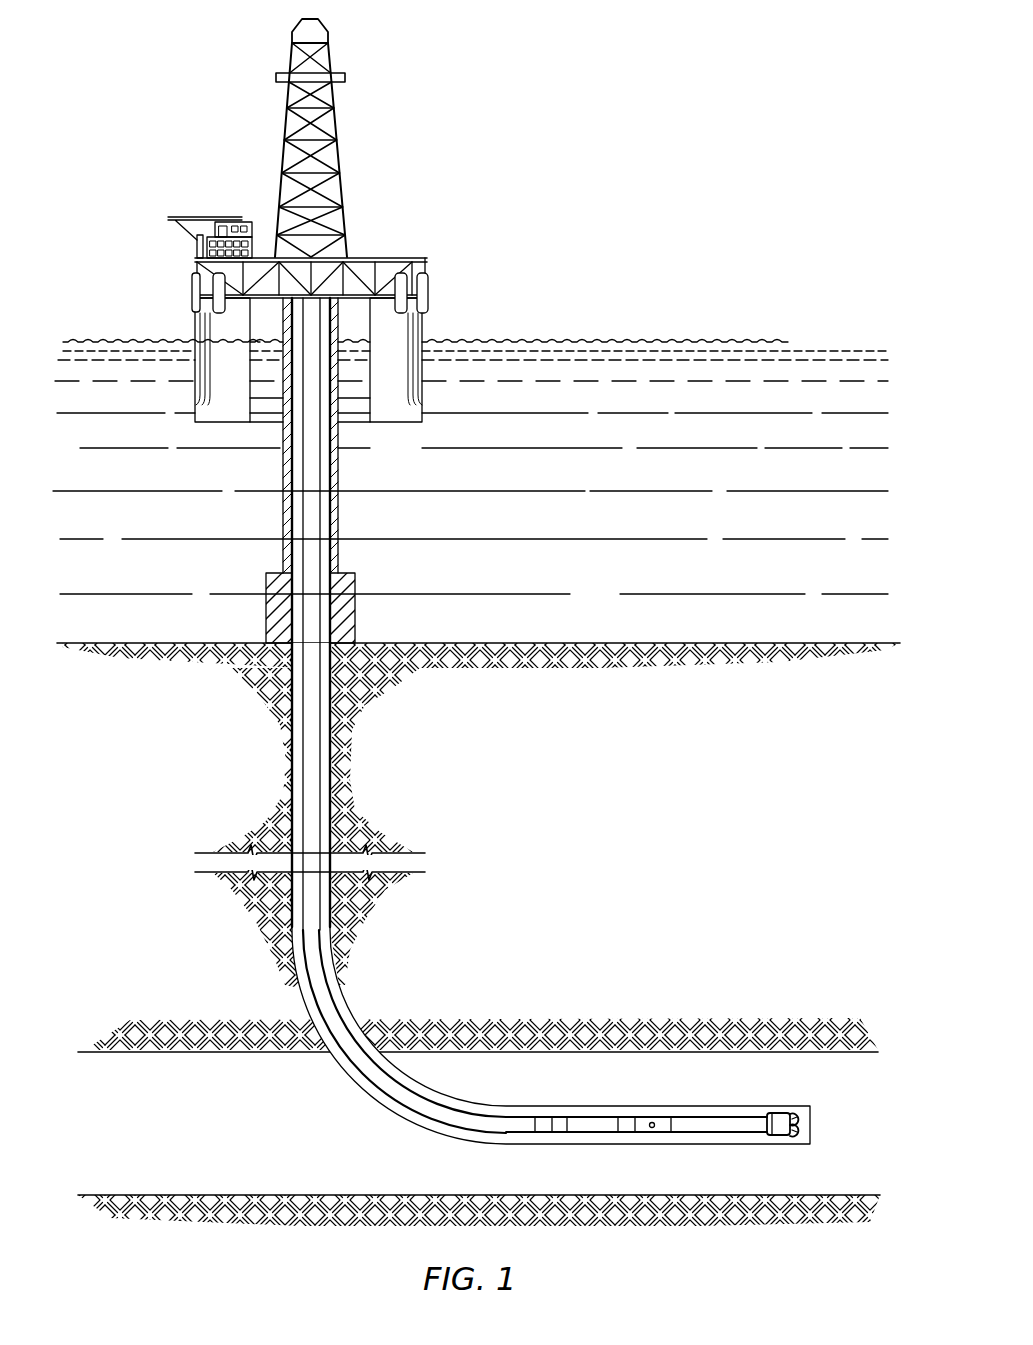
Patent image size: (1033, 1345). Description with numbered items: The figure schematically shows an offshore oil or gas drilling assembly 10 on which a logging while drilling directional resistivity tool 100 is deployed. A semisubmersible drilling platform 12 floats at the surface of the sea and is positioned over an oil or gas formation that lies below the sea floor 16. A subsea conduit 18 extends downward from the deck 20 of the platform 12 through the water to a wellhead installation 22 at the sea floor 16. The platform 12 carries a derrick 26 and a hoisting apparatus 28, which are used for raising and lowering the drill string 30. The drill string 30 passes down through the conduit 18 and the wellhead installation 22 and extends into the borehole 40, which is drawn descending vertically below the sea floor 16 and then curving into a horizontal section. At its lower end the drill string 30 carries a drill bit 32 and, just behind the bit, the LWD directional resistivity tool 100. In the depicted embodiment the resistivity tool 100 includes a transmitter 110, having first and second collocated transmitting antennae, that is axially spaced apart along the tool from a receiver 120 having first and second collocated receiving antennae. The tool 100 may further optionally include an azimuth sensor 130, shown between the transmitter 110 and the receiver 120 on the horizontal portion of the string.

The offshore oil or gas drilling assembly 10 is at (320, 220).
The semisubmersible drilling platform 12 is at (414, 258).
The sea floor 16 is at (577, 643).
The subsea conduit 18 is at (340, 514).
The deck 20 is at (428, 296).
The wellhead installation 22 is at (355, 578).
The derrick 26 is at (318, 240).
The hoisting apparatus 28 is at (334, 62).
The drill string 30 is at (312, 432).
The drill bit 32 is at (798, 1115).
The borehole 40 is at (293, 748).
The logging while drilling directional resistivity tool 100 is at (636, 1127).
The transmitter 110 is at (562, 1115).
The receiver 120 is at (627, 1133).
The azimuth sensor 130 is at (652, 1117).